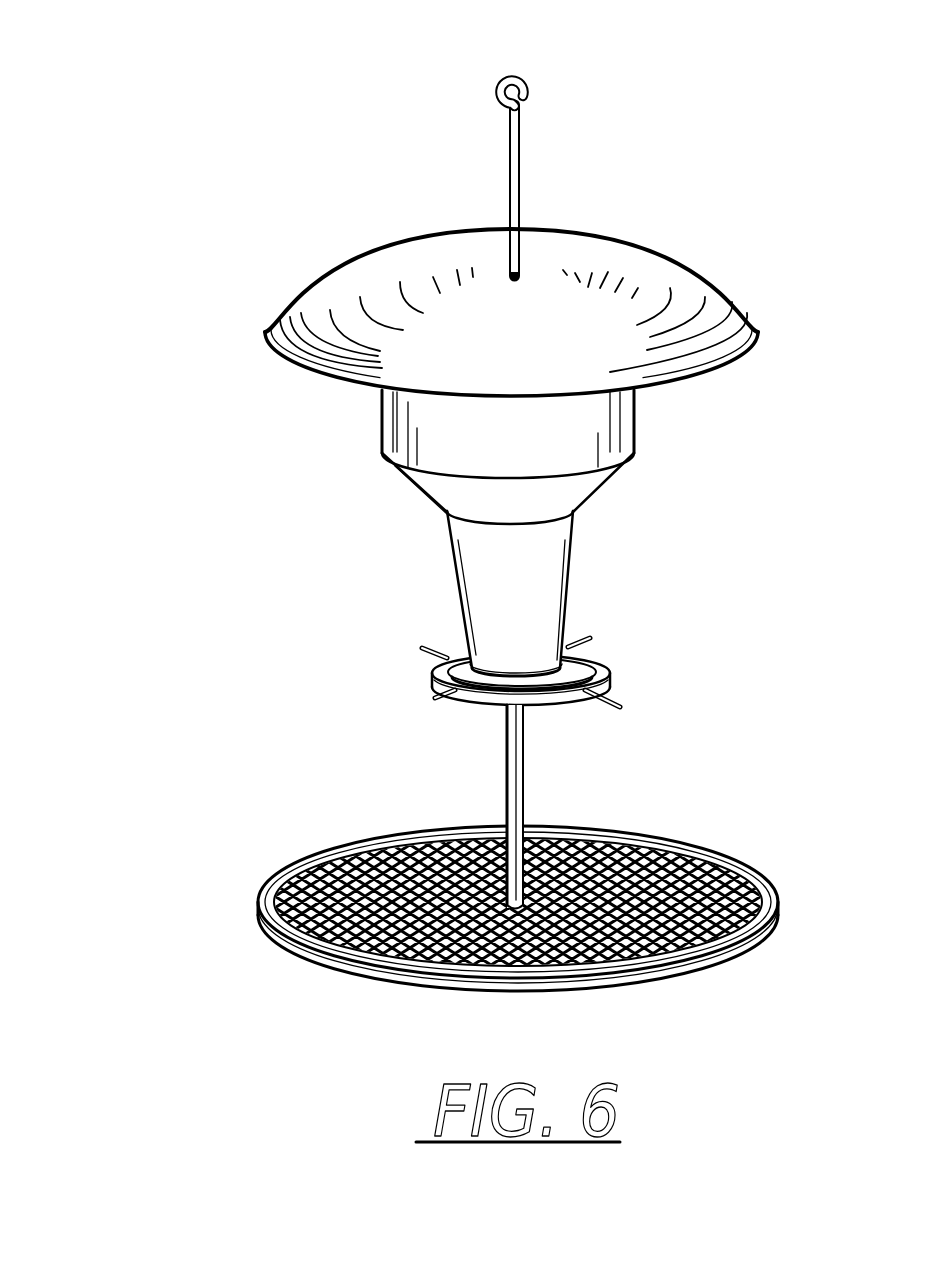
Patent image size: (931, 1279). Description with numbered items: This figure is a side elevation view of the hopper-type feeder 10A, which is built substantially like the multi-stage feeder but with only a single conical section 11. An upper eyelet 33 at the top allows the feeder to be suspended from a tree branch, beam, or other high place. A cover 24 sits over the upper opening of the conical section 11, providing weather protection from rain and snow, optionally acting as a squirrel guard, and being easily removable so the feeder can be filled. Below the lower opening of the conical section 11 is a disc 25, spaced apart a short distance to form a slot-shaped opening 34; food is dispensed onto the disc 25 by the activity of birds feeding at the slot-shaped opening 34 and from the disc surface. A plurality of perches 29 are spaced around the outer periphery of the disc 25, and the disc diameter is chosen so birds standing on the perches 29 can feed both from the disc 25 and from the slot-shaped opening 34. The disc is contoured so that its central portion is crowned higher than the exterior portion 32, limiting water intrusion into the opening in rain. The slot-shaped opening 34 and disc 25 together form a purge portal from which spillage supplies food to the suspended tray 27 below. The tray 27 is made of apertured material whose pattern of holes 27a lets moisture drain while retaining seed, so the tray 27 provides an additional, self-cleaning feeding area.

The hopper-type feeder 10A is at (487, 498).
The upper eyelet 33 is at (515, 75).
The cover 24 is at (648, 288).
The conical section 11 is at (556, 556).
The perches 29 is at (578, 641).
The exterior portion 32 is at (590, 664).
The slot-shaped opening 34 is at (462, 655).
The disc 25 is at (555, 714).
The tray 27 is at (749, 875).
The holes 27a is at (631, 877).